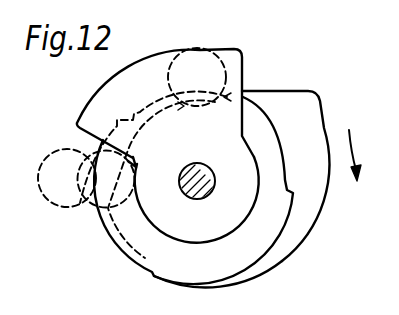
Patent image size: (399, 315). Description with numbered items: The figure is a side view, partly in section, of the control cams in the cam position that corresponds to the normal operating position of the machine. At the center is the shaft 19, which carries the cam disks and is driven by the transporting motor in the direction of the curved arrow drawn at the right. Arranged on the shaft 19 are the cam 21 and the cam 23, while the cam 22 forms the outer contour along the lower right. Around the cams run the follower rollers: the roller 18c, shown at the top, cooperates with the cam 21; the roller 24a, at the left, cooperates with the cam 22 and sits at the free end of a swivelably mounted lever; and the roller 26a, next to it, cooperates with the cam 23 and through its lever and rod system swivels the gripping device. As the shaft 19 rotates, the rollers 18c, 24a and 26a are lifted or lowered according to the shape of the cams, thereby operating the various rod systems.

The roller 18c is at (198, 58).
The shaft 19 is at (207, 193).
The cam 21 is at (293, 97).
The cam 22 is at (262, 239).
The cam 23 is at (207, 143).
The roller 24a is at (56, 201).
The roller 26a is at (92, 209).